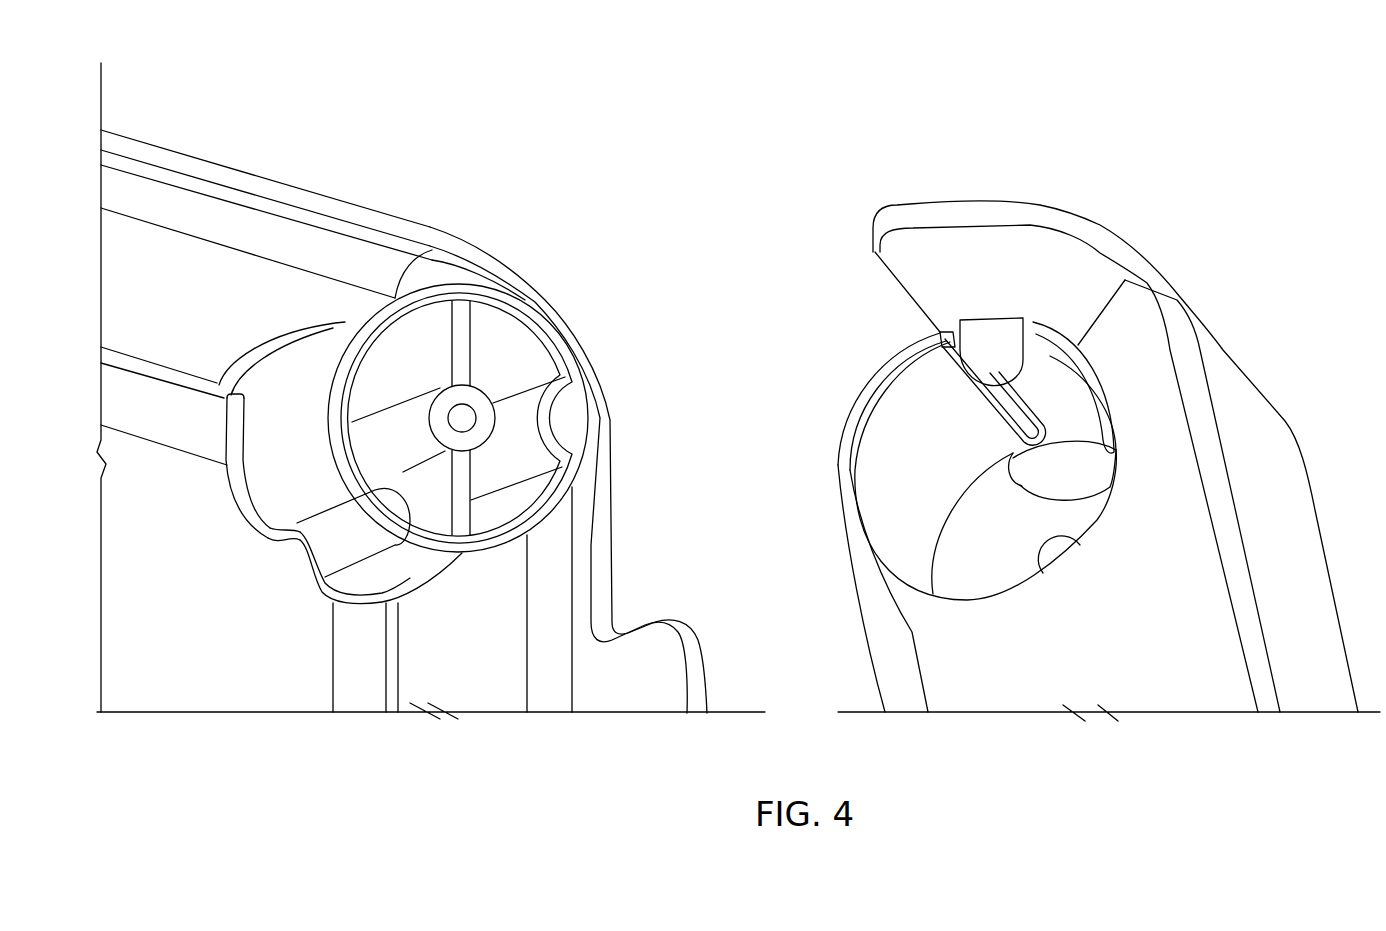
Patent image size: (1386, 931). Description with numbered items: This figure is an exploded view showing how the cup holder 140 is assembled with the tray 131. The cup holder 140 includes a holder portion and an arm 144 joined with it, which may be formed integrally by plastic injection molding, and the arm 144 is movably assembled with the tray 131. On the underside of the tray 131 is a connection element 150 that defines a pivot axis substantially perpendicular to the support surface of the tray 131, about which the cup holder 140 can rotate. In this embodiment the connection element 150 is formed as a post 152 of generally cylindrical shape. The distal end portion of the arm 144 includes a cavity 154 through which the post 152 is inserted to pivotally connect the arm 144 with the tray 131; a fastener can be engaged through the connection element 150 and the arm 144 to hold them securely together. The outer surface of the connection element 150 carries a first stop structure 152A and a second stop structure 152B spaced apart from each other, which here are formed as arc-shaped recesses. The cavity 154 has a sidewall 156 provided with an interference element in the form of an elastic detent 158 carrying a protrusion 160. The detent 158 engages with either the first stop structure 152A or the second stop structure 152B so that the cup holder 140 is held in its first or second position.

The tray 131 is at (283, 190).
The cup holder 140 is at (1262, 165).
The arm 144 is at (1298, 501).
The connection element 150 is at (536, 272).
The post 152 is at (573, 332).
The first stop structure 152A is at (602, 415).
The second stop structure 152B is at (262, 573).
The cavity 154 is at (873, 512).
The sidewall 156 is at (840, 455).
The elastic detent 158 is at (1035, 405).
The protrusion 160 is at (992, 335).